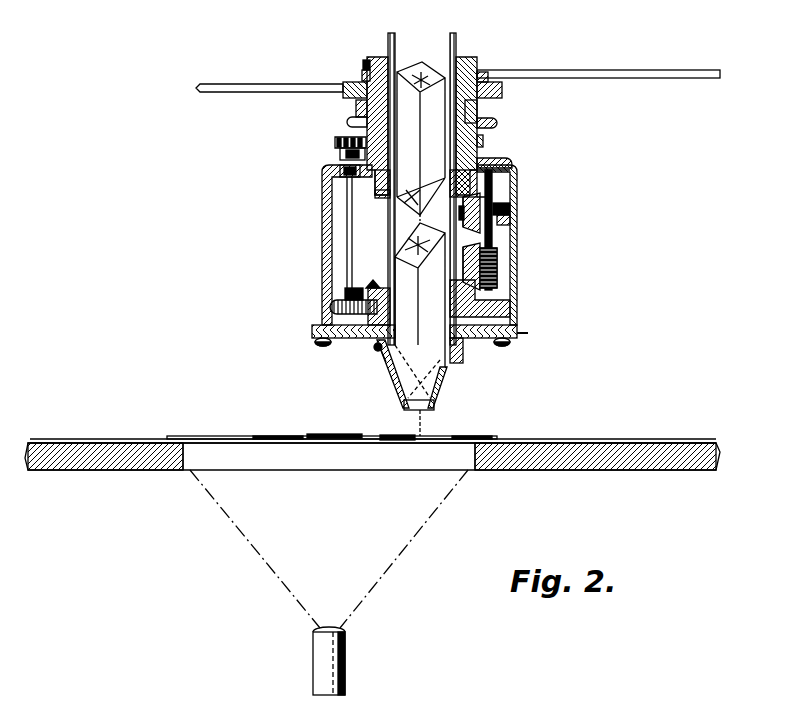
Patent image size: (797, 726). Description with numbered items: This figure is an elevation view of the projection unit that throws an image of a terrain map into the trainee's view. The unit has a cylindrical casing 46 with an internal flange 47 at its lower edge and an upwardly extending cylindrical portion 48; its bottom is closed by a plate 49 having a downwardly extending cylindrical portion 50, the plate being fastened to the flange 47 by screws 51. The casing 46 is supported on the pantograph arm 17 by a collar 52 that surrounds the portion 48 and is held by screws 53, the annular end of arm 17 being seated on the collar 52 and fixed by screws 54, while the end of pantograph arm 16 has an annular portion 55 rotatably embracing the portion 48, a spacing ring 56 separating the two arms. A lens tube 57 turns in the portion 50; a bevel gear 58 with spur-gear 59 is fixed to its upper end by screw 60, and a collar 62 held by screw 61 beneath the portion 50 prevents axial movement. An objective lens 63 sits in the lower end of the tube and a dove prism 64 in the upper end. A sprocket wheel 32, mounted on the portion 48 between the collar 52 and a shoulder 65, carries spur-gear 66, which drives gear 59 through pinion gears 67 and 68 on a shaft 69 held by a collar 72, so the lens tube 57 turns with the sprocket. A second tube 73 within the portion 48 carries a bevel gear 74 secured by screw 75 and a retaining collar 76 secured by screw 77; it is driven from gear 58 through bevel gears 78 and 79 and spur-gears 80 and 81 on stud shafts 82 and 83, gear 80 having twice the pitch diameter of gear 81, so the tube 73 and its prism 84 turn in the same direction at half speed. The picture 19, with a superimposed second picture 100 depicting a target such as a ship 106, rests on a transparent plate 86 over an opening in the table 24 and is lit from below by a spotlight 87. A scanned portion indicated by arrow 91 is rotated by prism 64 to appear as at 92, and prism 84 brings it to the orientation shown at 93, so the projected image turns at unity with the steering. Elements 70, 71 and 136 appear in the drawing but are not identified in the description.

The pantograph arm 16 is at (548, 73).
The pantograph arm 17 is at (292, 88).
The picture 19 is at (247, 437).
The table 24 is at (612, 445).
The sprocket wheel 32 is at (497, 123).
The cylindrical casing 46 is at (322, 238).
The internal flange 47 is at (517, 310).
The cylindrical portion 48 is at (477, 106).
The plate 49 is at (517, 331).
The cylindrical portion 50 is at (345, 338).
The screws 51 is at (316, 343).
The collar 52 is at (346, 93).
The screws 53 is at (352, 121).
The screws 54 is at (362, 77).
The annular portion 55 is at (363, 65).
The spacing ring 56 is at (488, 75).
The lens tube 57 is at (440, 386).
The bevel gear 58 is at (372, 282).
The spur-gear 59 is at (478, 306).
The screw 60 is at (463, 345).
The screw 61 is at (375, 351).
The collar 62 is at (383, 357).
The objective lens 63 is at (410, 411).
The prism 64 is at (420, 295).
The shoulder 65 is at (497, 162).
The spur-gear 66 is at (483, 141).
The pinion gear 67 is at (337, 143).
The pinion gear 68 is at (337, 307).
The shaft 69 is at (347, 265).
The knob 70 is at (340, 155).
The collar 71 is at (345, 293).
The collar 72 is at (340, 170).
The second tube 73 is at (388, 45).
The bevel gear 74 is at (378, 196).
The screw 75 is at (375, 180).
The retaining collar 76 is at (470, 58).
The screw 77 is at (367, 60).
The bevel gear 78 is at (460, 220).
The bevel gear 79 is at (492, 236).
The spur-gear 80 is at (480, 183).
The spur-gear 81 is at (497, 283).
The stud shaft 82 is at (463, 213).
The stud shaft 83 is at (463, 265).
The prism 84 is at (421, 138).
The transparent plate 86 is at (217, 446).
The spotlight 87 is at (313, 668).
The arrow 91 is at (438, 413).
The rotated image 92 is at (418, 207).
The rotated image 93 is at (456, 45).
The second picture 100 is at (273, 436).
The ship 106 is at (332, 434).
The tab 136 is at (530, 334).